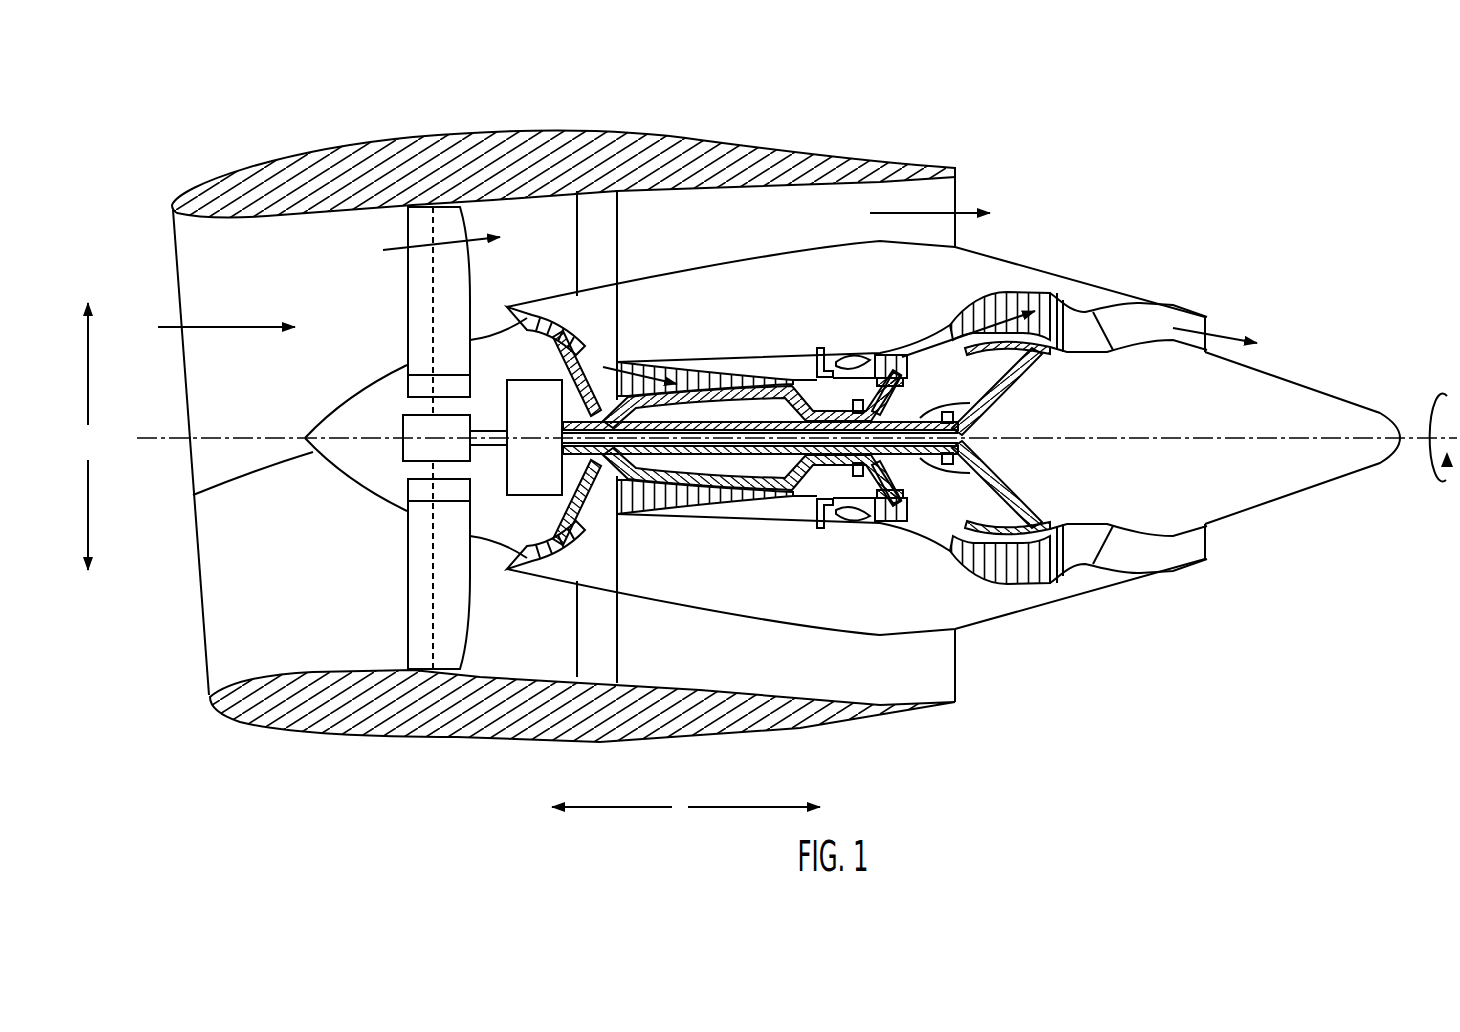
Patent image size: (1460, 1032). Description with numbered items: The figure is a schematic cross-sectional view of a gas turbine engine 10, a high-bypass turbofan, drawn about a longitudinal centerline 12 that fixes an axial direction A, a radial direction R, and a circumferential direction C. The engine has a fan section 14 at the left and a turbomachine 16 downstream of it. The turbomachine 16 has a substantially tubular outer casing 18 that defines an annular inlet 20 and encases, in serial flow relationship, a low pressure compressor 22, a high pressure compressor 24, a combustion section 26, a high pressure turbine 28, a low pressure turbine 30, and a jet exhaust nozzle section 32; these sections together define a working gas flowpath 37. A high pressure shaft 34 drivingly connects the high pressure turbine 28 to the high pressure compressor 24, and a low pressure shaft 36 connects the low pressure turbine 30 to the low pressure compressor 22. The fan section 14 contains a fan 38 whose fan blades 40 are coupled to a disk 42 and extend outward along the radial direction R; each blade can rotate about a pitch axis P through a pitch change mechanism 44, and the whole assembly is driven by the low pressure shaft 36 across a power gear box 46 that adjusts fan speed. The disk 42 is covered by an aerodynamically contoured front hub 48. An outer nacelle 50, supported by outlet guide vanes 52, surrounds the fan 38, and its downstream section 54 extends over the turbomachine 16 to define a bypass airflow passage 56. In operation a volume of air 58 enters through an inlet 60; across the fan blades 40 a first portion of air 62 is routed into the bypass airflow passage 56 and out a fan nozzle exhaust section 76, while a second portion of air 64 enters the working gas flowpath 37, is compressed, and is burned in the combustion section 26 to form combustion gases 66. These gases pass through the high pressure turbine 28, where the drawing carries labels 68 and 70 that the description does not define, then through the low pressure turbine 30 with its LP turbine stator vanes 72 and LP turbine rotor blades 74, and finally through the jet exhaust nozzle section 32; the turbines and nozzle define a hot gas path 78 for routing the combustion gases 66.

The gas turbine engine 10 is at (1118, 143).
The longitudinal centerline 12 is at (1150, 437).
The fan section 14 is at (370, 228).
The turbomachine 16 is at (755, 290).
The outer casing 18 is at (775, 617).
The annular inlet 20 is at (500, 563).
The low pressure compressor 22 is at (580, 527).
The high pressure compressor 24 is at (653, 513).
The combustion section 26 is at (843, 518).
The high pressure turbine 28 is at (908, 513).
The low pressure turbine 30 is at (1037, 590).
The jet exhaust nozzle section 32 is at (1108, 568).
The high pressure shaft 34 is at (900, 404).
The low pressure shaft 36 is at (960, 402).
The working gas flowpath 37 is at (603, 500).
The fan 38 is at (365, 494).
The fan blades 40 is at (405, 585).
The disk 42 is at (420, 388).
The pitch change mechanism 44 is at (403, 420).
The power gear box 46 is at (547, 403).
The front hub 48 is at (193, 495).
The outer nacelle 50 is at (457, 737).
The outlet guide vanes 52 is at (620, 247).
The downstream section 54 is at (885, 163).
The bypass airflow passage 56 is at (805, 225).
The volume of air 58 is at (227, 325).
The inlet 60 is at (205, 677).
The first portion of air 62 is at (418, 249).
The second portion of air 64 is at (493, 318).
The combustion gases 66 is at (1027, 297).
The HP turbine stator vanes 68 is at (857, 515).
The HP turbine rotor blades 70 is at (960, 460).
The LP turbine stator vanes 72 is at (963, 560).
The LP turbine rotor blades 74 is at (973, 563).
The fan nozzle exhaust section 76 is at (943, 198).
The hot gas path 78 is at (942, 333).
The pitch axis P is at (440, 222).
The radial direction R is at (88, 436).
The axial direction A is at (686, 807).
The circumferential direction C is at (1441, 456).